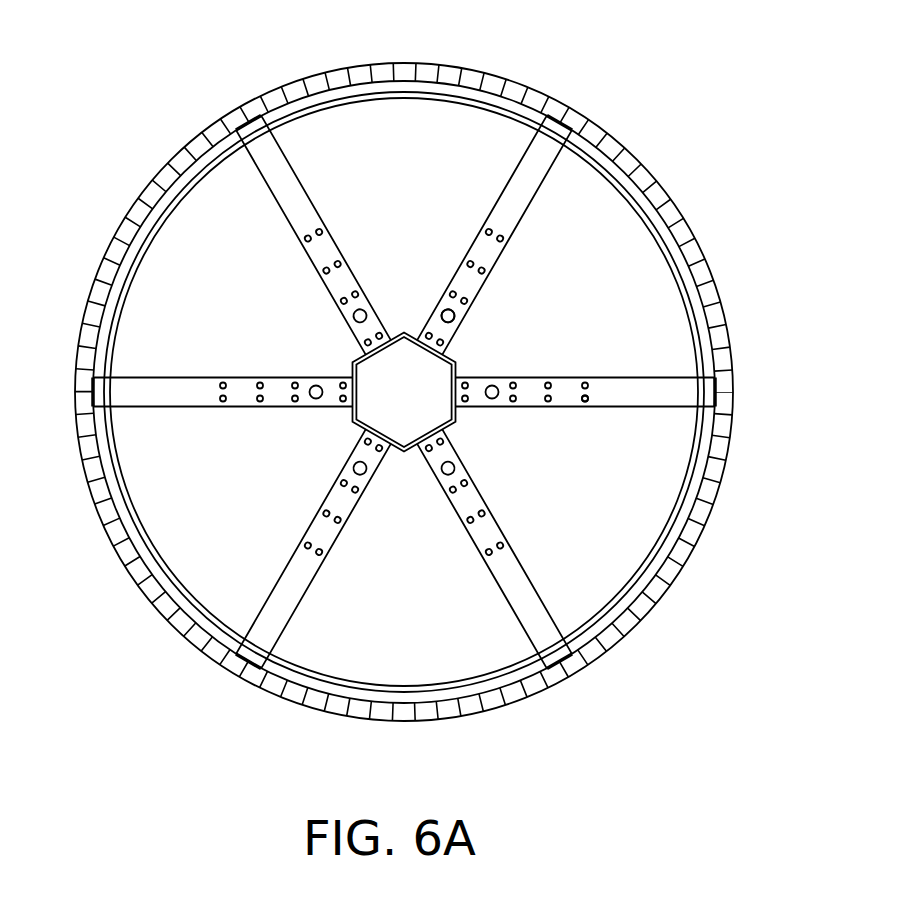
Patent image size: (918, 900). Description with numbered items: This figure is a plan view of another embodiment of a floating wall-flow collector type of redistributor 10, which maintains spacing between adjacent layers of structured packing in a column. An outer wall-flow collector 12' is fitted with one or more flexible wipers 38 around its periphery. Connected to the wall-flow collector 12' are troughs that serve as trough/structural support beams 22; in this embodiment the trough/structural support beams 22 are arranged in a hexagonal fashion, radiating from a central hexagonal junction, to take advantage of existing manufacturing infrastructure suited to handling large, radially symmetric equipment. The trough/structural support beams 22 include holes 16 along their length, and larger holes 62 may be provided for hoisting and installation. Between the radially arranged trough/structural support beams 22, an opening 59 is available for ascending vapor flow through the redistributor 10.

The redistributor 10 is at (416, 360).
The wall-flow collector 12' is at (415, 392).
The holes 16 is at (585, 402).
The trough/structural support beam 22 is at (153, 388).
The flexible wiper 38 is at (718, 446).
The opening 59 is at (397, 181).
The holes 62 is at (455, 318).